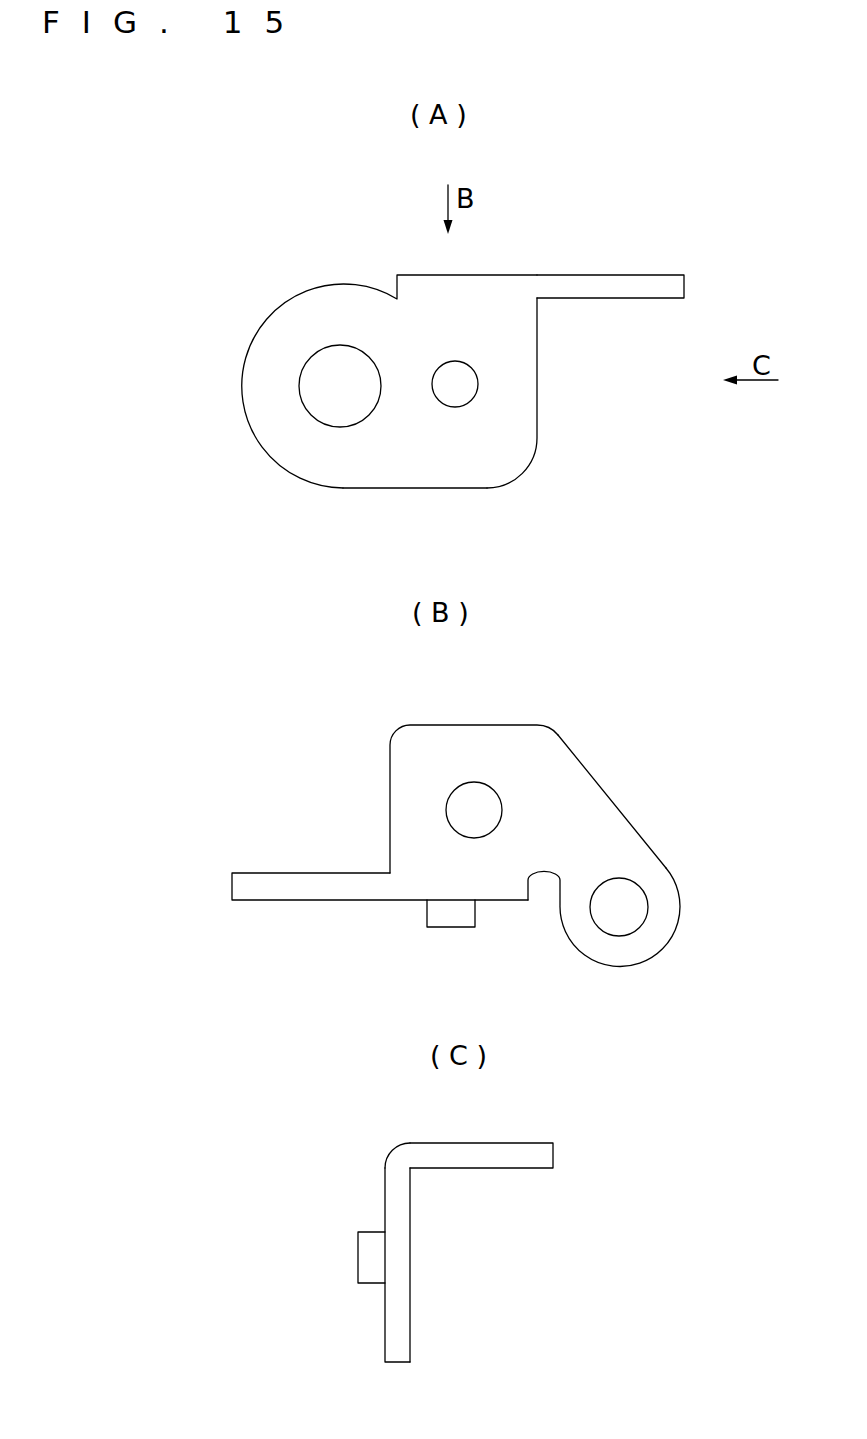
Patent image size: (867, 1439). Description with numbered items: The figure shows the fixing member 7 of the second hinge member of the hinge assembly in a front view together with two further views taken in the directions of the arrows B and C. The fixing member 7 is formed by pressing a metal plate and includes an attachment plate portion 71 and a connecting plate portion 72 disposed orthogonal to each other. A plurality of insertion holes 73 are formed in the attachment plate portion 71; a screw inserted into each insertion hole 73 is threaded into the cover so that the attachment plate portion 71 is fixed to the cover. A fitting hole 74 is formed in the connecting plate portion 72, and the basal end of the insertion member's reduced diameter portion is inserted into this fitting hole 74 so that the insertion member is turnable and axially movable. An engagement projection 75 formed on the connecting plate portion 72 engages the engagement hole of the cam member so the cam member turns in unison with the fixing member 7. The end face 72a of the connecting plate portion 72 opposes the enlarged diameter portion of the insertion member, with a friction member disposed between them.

The fixing member 7 is at (501, 271).
The attachment plate portion 71 is at (620, 273).
The connecting plate portion 72 is at (403, 488).
The end face 72a is at (411, 1238).
The insertion hole 73 is at (474, 785).
The fitting hole 74 is at (305, 386).
The engagement projection 75 is at (468, 384).